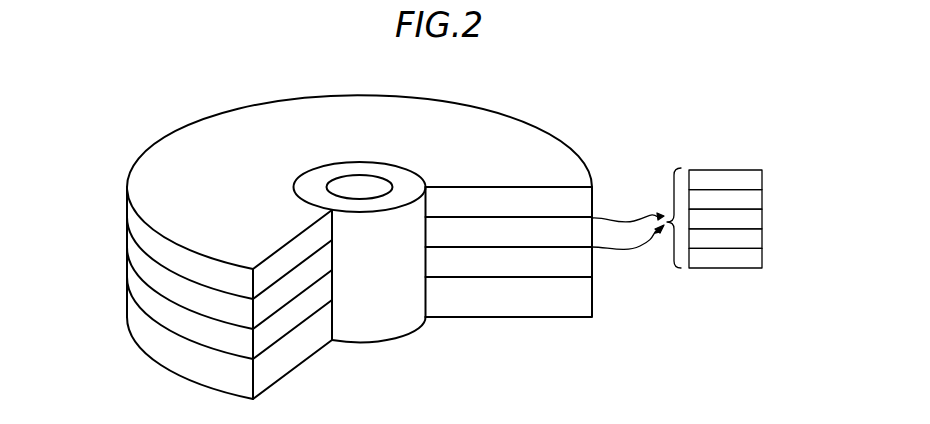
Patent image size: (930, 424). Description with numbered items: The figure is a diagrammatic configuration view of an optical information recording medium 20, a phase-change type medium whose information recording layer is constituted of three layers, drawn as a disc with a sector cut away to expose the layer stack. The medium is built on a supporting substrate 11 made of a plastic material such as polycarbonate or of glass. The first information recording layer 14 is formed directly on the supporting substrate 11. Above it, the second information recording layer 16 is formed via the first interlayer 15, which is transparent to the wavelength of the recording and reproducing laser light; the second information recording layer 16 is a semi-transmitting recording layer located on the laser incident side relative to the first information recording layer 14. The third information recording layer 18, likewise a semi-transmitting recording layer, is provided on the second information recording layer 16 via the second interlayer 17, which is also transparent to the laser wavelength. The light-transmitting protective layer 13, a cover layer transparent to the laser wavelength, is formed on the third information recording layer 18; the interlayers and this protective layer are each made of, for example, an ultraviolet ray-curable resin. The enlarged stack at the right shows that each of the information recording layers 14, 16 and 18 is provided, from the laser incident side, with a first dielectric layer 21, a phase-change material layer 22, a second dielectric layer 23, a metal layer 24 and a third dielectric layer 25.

The optical information recording medium 20 is at (114, 88).
The supporting substrate 11 is at (134, 318).
The light-transmitting protective layer 13 is at (134, 218).
The first interlayer 15 is at (134, 284).
The second interlayer 17 is at (134, 251).
The first information recording layer 14 is at (534, 278).
The second information recording layer 16 is at (568, 252).
The third information recording layer 18 is at (575, 221).
The first dielectric layer 21 is at (757, 174).
The phase-change material layer 22 is at (757, 195).
The second dielectric layer 23 is at (757, 216).
The metal layer 24 is at (757, 237).
The third dielectric layer 25 is at (757, 258).